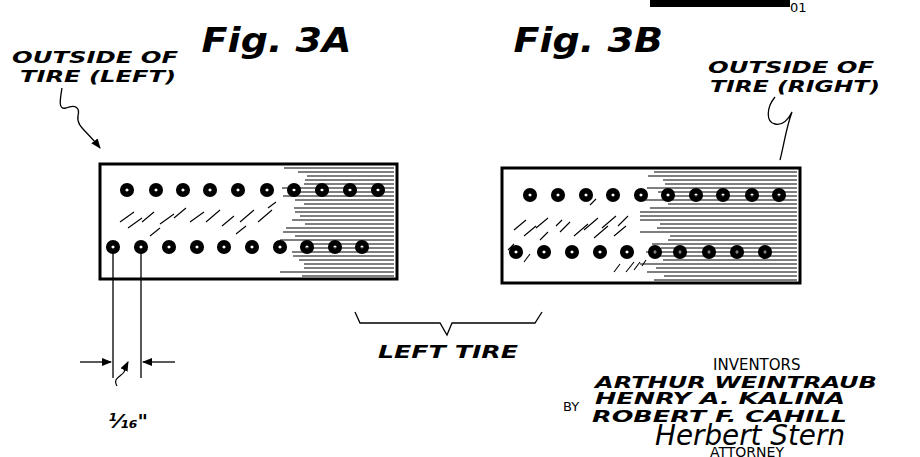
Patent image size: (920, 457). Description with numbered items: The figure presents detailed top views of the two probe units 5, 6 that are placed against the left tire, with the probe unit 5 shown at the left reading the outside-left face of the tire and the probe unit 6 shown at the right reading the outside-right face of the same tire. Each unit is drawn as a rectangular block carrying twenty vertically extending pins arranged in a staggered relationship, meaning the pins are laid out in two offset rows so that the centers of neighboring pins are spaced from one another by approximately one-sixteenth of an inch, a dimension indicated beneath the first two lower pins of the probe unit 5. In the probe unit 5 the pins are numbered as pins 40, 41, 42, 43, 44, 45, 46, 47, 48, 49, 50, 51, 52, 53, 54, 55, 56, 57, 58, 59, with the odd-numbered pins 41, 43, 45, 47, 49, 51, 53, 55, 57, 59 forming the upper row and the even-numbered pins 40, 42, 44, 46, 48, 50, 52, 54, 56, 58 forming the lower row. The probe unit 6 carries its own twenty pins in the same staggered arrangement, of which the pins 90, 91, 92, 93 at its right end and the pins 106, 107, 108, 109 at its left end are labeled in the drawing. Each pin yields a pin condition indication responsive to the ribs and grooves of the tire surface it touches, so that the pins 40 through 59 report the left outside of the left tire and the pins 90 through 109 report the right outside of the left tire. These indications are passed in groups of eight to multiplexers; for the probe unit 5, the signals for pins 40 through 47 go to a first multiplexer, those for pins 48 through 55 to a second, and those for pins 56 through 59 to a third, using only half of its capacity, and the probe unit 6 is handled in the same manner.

In FIG. 3A, the probe unit 5 is at (98, 214).
In FIG. 3B, the probe unit 6 is at (804, 225).
In FIG. 3A, the pin 40 is at (107, 247).
In FIG. 3A, the pin 41 is at (122, 188).
In FIG. 3A, the pin 42 is at (138, 252).
In FIG. 3A, the pin 43 is at (155, 184).
In FIG. 3A, the pin 44 is at (169, 253).
In FIG. 3A, the pin 45 is at (182, 184).
In FIG. 3A, the pin 46 is at (197, 253).
In FIG. 3A, the pin 47 is at (210, 184).
In FIG. 3A, the pin 48 is at (224, 253).
In FIG. 3A, the pin 49 is at (240, 184).
In FIG. 3A, the pin 50 is at (253, 253).
In FIG. 3A, the pin 51 is at (268, 184).
In FIG. 3A, the pin 52 is at (281, 253).
In FIG. 3A, the pin 53 is at (296, 184).
In FIG. 3A, the pin 54 is at (309, 253).
In FIG. 3A, the pin 55 is at (324, 184).
In FIG. 3A, the pin 56 is at (337, 252).
In FIG. 3A, the pin 57 is at (352, 184).
In FIG. 3A, the pin 58 is at (368, 248).
In FIG. 3A, the pin 59 is at (380, 184).
In FIG. 3B, the pin 90 is at (783, 190).
In FIG. 3B, the pin 91 is at (770, 255).
In FIG. 3B, the pin 92 is at (752, 189).
In FIG. 3B, the pin 93 is at (739, 258).
In FIG. 3B, the pin 106 is at (559, 189).
In FIG. 3B, the pin 107 is at (543, 258).
In FIG. 3B, the pin 108 is at (528, 189).
In FIG. 3B, the pin 109 is at (512, 256).